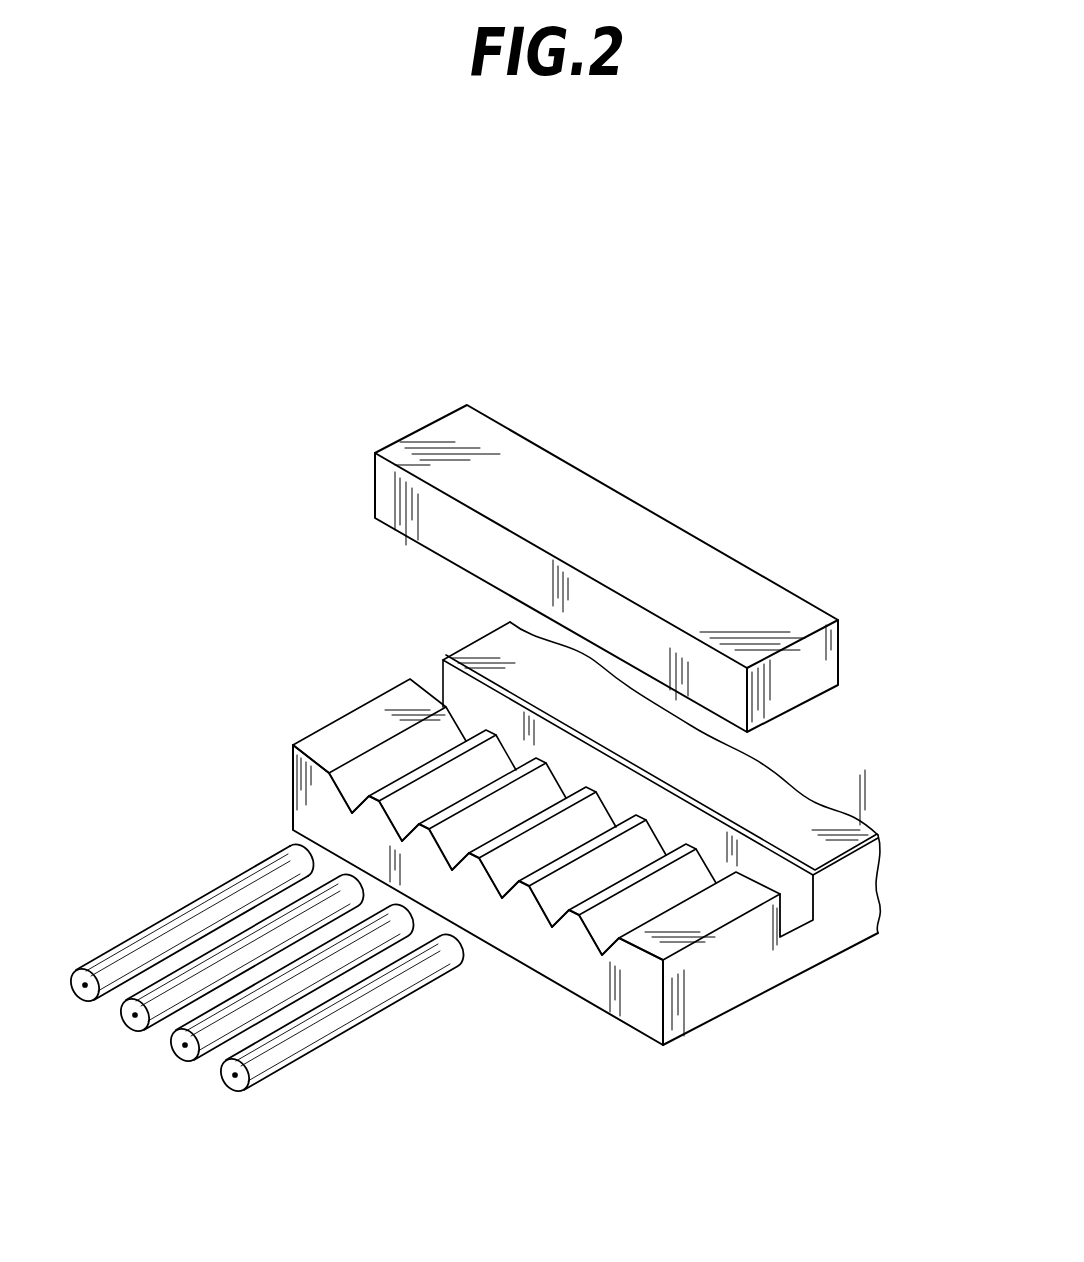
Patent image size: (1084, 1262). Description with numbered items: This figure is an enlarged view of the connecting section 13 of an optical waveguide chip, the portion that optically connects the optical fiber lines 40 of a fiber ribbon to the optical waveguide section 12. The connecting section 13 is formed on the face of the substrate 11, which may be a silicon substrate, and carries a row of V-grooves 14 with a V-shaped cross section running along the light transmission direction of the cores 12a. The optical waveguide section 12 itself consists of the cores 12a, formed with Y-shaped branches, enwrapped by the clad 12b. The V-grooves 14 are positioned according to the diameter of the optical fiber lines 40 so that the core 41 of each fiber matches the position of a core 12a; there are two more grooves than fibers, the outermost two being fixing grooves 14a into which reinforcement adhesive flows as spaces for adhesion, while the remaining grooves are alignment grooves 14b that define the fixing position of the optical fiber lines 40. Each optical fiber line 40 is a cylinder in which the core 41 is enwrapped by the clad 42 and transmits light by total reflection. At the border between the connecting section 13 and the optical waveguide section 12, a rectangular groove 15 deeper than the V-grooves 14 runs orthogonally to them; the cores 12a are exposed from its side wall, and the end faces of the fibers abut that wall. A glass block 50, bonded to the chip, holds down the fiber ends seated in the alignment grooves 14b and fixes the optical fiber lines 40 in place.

The substrate 11 is at (855, 938).
The optical waveguide section 12 is at (934, 762).
The cores 12a is at (703, 808).
The clad 12b is at (840, 827).
The connecting section 13 is at (347, 699).
The V-grooves 14 is at (546, 1084).
The fixing grooves 14a is at (373, 772).
The alignment grooves 14b is at (558, 895).
The rectangular groove 15 is at (793, 923).
The optical fiber lines 40 is at (150, 836).
The core 41 is at (85, 980).
The clad 42 is at (203, 912).
The glass block 50 is at (613, 512).